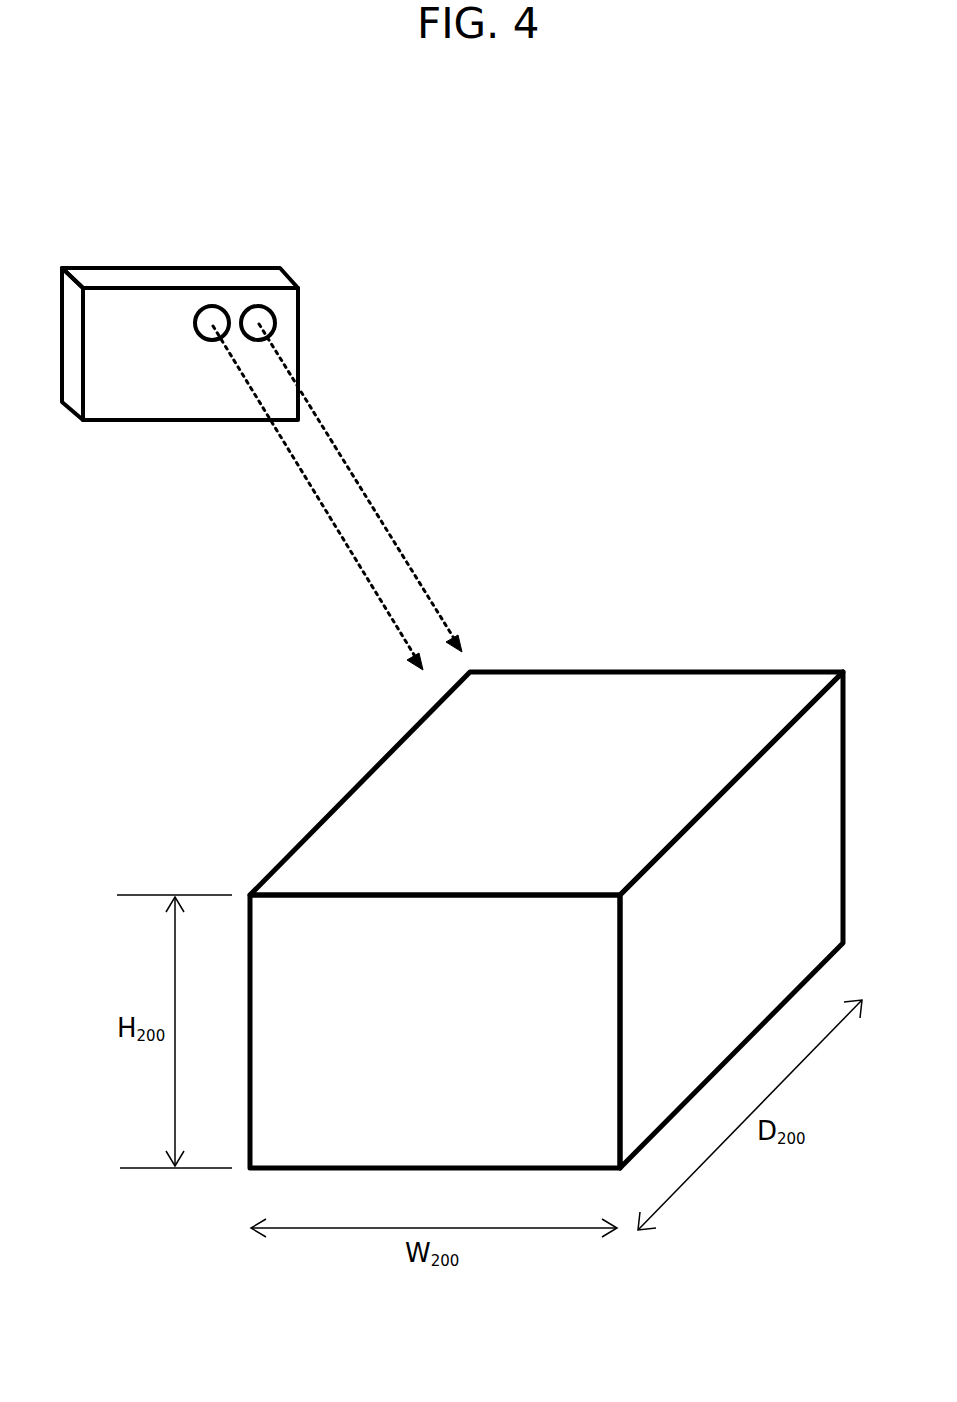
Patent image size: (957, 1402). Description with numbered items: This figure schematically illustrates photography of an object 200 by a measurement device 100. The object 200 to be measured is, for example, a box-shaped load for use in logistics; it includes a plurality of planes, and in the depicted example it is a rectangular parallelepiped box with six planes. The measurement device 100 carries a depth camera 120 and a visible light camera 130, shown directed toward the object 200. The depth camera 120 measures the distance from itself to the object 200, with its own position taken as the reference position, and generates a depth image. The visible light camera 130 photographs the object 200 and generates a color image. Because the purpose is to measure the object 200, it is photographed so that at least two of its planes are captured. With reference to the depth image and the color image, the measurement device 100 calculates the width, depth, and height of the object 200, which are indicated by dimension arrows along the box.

The measurement device 100 is at (107, 278).
The depth camera 120 is at (212, 305).
The visible light camera 130 is at (270, 305).
The object 200 is at (678, 695).